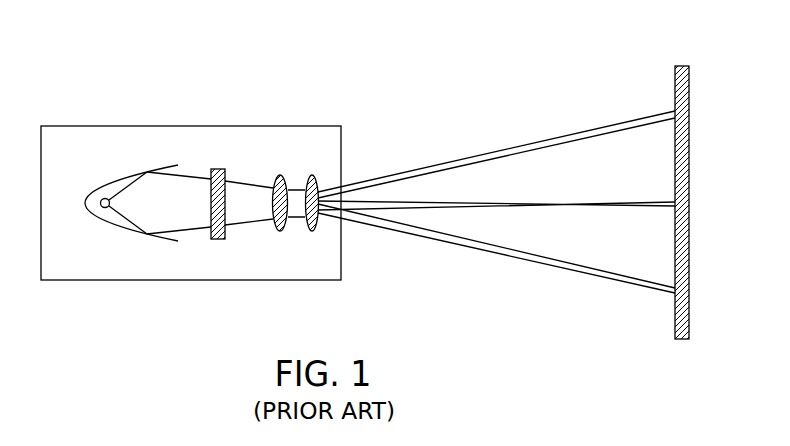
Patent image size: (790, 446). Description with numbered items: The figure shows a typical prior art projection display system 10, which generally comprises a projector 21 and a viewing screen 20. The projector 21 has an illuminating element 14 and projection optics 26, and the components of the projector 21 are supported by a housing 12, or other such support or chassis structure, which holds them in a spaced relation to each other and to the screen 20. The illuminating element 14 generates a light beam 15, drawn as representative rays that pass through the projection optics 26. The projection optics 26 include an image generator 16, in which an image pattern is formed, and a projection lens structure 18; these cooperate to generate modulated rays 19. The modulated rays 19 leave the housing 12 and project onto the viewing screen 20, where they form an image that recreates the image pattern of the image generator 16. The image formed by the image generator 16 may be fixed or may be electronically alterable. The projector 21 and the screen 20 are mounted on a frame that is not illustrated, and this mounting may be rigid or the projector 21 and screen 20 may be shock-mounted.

The projection display system 10 is at (425, 123).
The housing 12 is at (63, 272).
The illuminating element 14 is at (120, 223).
The light beam 15 is at (185, 232).
The image generator 16 is at (220, 239).
The projection lens structure 18 is at (264, 233).
The modulated rays 19 is at (458, 248).
The viewing screen 20 is at (675, 316).
The projector 21 is at (230, 112).
The projection optics 26 is at (202, 170).